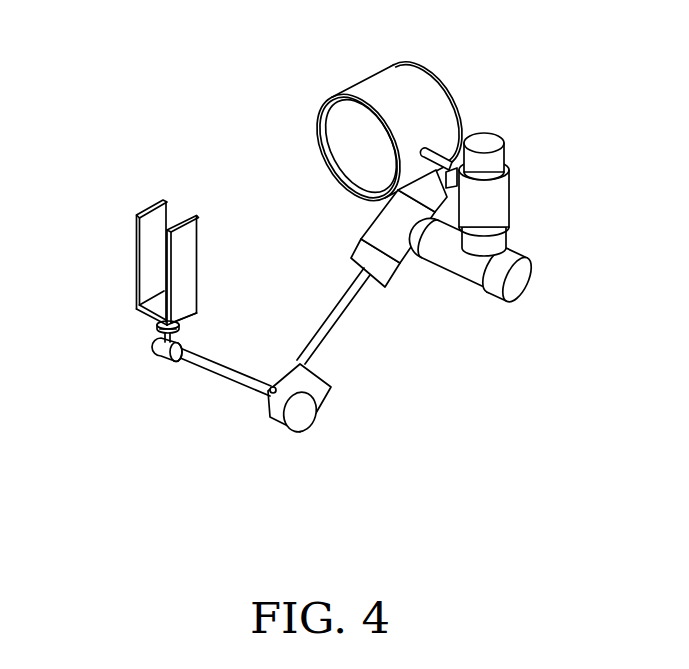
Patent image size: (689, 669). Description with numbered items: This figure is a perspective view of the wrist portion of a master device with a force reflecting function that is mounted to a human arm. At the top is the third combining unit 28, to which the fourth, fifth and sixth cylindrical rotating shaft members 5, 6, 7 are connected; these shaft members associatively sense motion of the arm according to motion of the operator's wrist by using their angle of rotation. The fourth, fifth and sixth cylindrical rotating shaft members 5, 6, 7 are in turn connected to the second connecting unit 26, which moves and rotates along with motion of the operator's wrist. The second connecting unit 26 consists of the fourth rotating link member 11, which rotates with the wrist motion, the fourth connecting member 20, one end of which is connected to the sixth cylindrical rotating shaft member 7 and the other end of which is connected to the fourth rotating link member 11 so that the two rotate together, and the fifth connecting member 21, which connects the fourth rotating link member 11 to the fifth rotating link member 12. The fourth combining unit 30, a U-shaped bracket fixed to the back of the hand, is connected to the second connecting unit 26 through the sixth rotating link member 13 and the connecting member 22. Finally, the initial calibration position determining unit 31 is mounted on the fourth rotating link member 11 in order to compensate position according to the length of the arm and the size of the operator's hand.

The third combining unit 28 is at (360, 82).
The fourth cylindrical rotating shaft member 5 is at (512, 191).
The fifth cylindrical rotating shaft member 6 is at (458, 280).
The sixth cylindrical rotating shaft member 7 is at (388, 203).
The fourth connecting member 20 is at (343, 322).
The initial calibration position determining unit 31 is at (302, 418).
The fourth rotating link member 11 is at (275, 387).
The fifth connecting member 21 is at (203, 357).
The fifth rotating link member 12 is at (156, 352).
The sixth rotating link member 13 is at (153, 323).
The connecting member 22 is at (186, 332).
The fourth combining unit 30 is at (136, 261).
The second connecting unit 26 is at (135, 421).